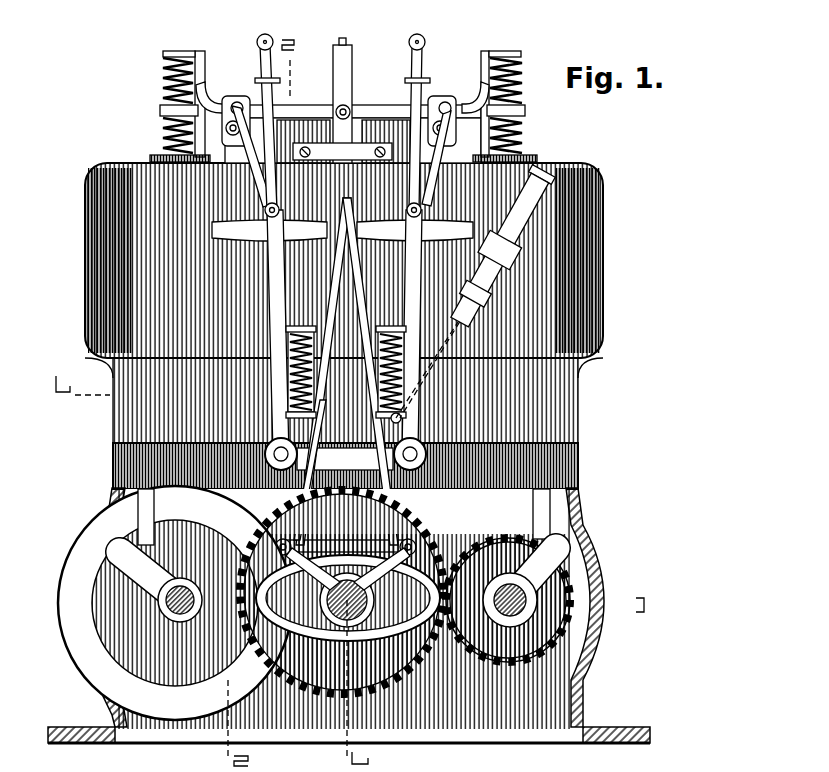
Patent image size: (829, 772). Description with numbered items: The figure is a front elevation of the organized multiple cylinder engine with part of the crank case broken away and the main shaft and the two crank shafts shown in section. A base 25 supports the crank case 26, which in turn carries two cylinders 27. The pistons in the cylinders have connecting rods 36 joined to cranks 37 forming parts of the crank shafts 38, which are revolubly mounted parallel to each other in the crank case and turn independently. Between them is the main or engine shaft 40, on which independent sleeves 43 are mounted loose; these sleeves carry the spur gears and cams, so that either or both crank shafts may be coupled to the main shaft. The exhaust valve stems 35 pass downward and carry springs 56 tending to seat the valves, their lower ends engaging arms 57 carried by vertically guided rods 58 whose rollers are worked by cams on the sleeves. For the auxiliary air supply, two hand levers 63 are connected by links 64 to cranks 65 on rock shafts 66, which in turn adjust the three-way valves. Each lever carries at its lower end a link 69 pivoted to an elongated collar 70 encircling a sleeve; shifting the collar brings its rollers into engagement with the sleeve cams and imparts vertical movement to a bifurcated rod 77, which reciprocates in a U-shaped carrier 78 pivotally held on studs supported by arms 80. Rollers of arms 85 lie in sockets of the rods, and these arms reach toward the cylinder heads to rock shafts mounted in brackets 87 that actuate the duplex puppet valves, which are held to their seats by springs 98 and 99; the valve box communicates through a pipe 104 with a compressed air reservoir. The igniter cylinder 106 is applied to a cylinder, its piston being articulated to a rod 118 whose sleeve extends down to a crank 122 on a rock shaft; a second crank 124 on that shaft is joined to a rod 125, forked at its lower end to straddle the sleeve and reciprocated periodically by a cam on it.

The base 25 is at (651, 740).
The crank case 26 is at (613, 590).
The cylinders 27 is at (86, 300).
The exhaust valve stems 35 is at (378, 373).
The connecting rods 36 is at (154, 510).
The cranks 37 is at (338, 587).
The crank shafts 38 is at (614, 656).
The main or engine shaft 40 is at (342, 592).
The sleeves 43 is at (340, 625).
The springs 56 is at (316, 349).
The arms 57 is at (318, 404).
The rods 58 is at (572, 405).
The levers 63 is at (274, 45).
The links 64 is at (190, 178).
The cranks 65 is at (446, 100).
The rock shafts 66 is at (438, 106).
The links 69 is at (348, 598).
The collars 70 is at (372, 590).
The bifurcated rods 77 is at (352, 262).
The carriers 78 is at (346, 82).
The arms 80 is at (343, 140).
The arms 85 is at (296, 110).
The brackets 87 is at (206, 76).
The spring 98 is at (164, 130).
The spring 99 is at (165, 78).
The pipe 104 is at (157, 158).
The igniter cylinder 106 is at (512, 228).
The rod 118 is at (378, 330).
The crank 122 is at (402, 421).
The crank 124 is at (400, 416).
The rod 125 is at (476, 519).